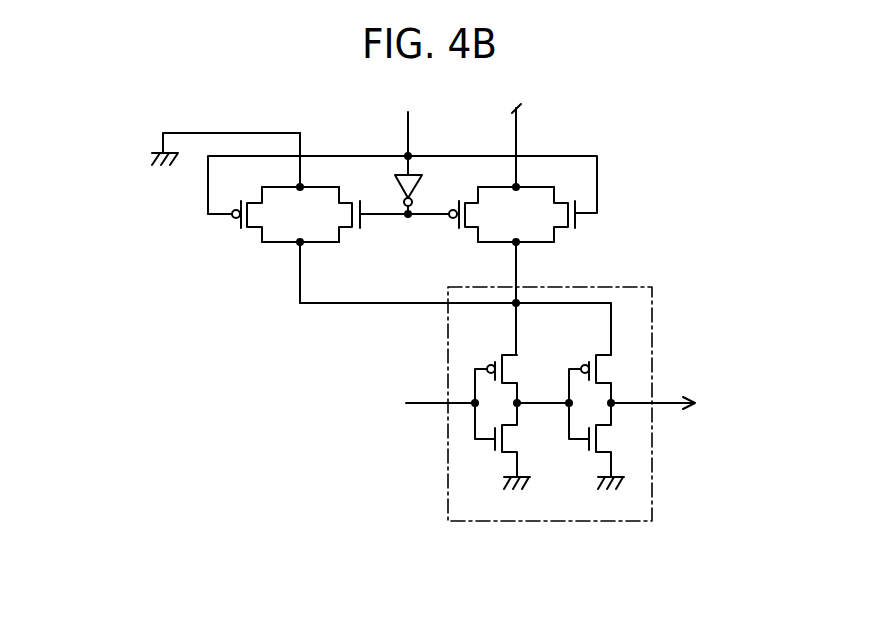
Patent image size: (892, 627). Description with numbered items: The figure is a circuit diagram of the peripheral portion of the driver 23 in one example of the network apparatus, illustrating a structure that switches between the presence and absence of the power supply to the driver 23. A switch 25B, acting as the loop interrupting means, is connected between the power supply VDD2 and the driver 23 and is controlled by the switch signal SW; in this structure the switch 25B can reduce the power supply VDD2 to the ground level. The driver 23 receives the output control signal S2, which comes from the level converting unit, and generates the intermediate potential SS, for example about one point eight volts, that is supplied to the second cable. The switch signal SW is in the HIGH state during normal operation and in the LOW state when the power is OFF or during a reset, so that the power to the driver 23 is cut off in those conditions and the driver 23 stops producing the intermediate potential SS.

The switch 25B is at (431, 191).
The driver 23 is at (550, 445).
The switch signal SW is at (408, 150).
The power supply VDD2 is at (517, 134).
The output control signal S2 is at (440, 389).
The intermediate potential SS is at (653, 392).